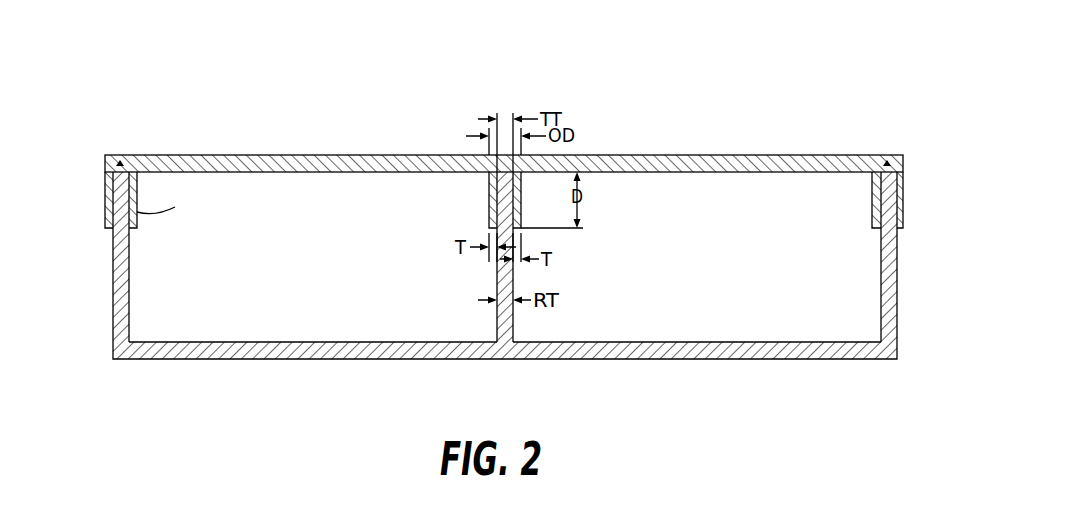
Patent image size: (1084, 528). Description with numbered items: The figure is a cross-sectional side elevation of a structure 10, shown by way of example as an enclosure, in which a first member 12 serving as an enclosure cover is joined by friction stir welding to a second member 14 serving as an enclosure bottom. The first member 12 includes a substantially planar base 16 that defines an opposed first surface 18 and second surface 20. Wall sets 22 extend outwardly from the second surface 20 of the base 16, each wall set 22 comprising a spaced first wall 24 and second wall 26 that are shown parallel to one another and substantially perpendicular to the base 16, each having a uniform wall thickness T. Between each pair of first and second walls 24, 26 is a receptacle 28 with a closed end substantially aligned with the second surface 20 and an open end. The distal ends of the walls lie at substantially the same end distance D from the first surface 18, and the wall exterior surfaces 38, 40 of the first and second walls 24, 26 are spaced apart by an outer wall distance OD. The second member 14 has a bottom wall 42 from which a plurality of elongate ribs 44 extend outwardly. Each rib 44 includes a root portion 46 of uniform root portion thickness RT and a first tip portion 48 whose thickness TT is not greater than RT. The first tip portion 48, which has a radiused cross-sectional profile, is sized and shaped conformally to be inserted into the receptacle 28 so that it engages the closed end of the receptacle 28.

The structure 10 is at (672, 116).
The first member 12 is at (208, 146).
The second member 14 is at (672, 369).
The base 16 is at (290, 155).
The first surface 18 is at (733, 156).
The second surface 20 is at (733, 172).
The wall set 22 is at (96, 178).
The first wall 24 is at (105, 210).
The second wall 26 is at (521, 186).
The receptacle 28 is at (121, 229).
The wall exterior surface 38 is at (488, 177).
The wall exterior surface 40 is at (513, 212).
The bottom wall 42 is at (290, 360).
The elongate rib 44 is at (113, 316).
The root portion 46 is at (138, 280).
The first tip portion 48 is at (121, 152).